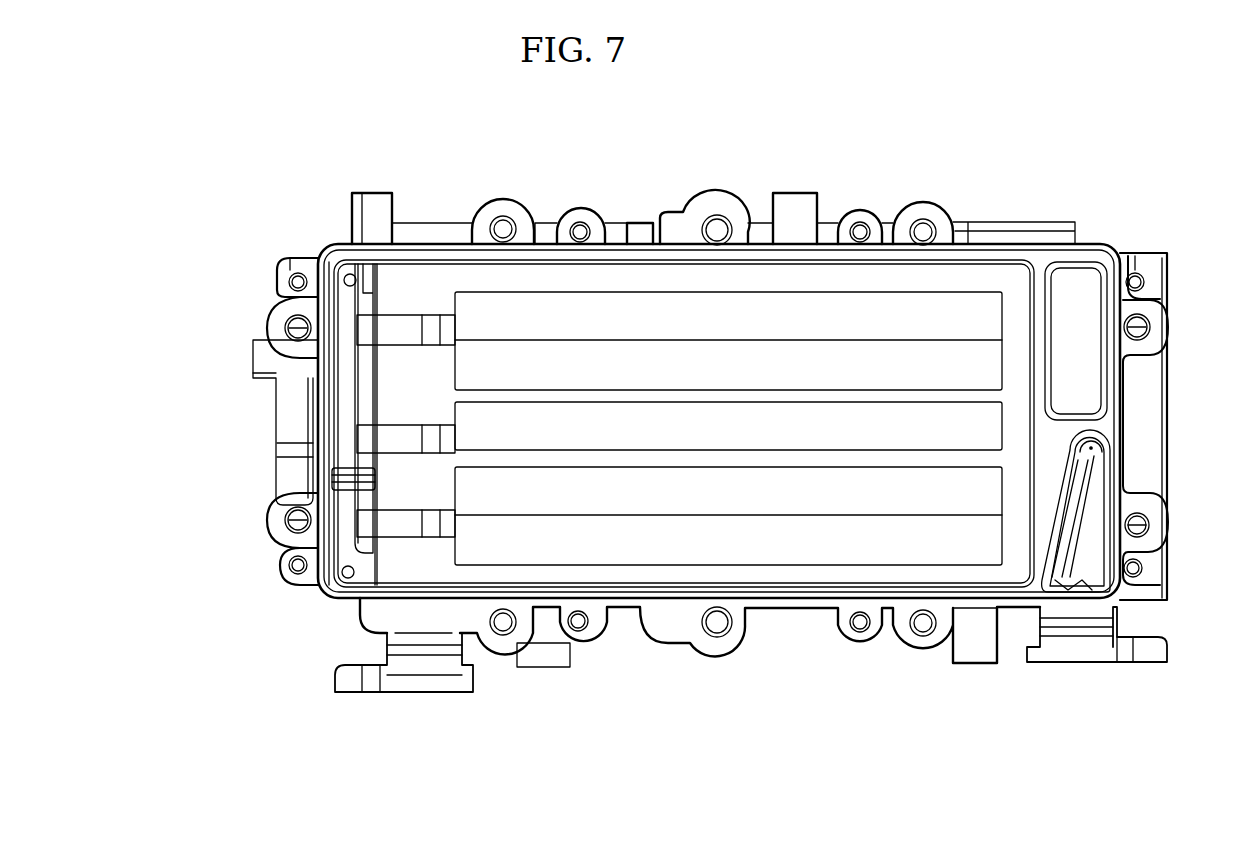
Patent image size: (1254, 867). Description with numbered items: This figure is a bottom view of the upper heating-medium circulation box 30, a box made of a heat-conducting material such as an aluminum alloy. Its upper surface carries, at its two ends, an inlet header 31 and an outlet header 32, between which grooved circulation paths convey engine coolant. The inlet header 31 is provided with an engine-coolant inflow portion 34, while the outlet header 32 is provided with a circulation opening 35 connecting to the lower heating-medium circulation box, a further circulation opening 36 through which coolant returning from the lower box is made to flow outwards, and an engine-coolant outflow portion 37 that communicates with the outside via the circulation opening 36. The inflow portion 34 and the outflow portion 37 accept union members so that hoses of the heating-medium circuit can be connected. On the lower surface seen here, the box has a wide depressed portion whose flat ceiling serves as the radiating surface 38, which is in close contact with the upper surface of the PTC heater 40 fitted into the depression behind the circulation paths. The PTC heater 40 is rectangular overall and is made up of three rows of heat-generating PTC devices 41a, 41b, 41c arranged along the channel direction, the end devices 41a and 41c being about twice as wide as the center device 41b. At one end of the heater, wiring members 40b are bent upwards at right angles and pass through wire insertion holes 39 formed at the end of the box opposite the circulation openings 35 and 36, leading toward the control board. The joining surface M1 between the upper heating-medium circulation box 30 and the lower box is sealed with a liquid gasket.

The upper heating-medium circulation box 30 is at (650, 148).
The inlet header 31 is at (276, 395).
The outlet header 32 is at (1172, 350).
The engine-coolant inflow portion 34 is at (418, 692).
The circulation opening 35 is at (1062, 275).
The circulation opening 36 is at (1087, 510).
The engine-coolant outflow portion 37 is at (1076, 665).
The radiating surface 38 is at (428, 285).
The wire insertion holes 39 is at (340, 345).
The PTC heater 40 is at (622, 703).
The wiring members 40b is at (347, 397).
The PTC device 41a is at (635, 532).
The PTC device 41b is at (685, 423).
The PTC device 41c is at (751, 353).
The joining surface M1 is at (1050, 455).